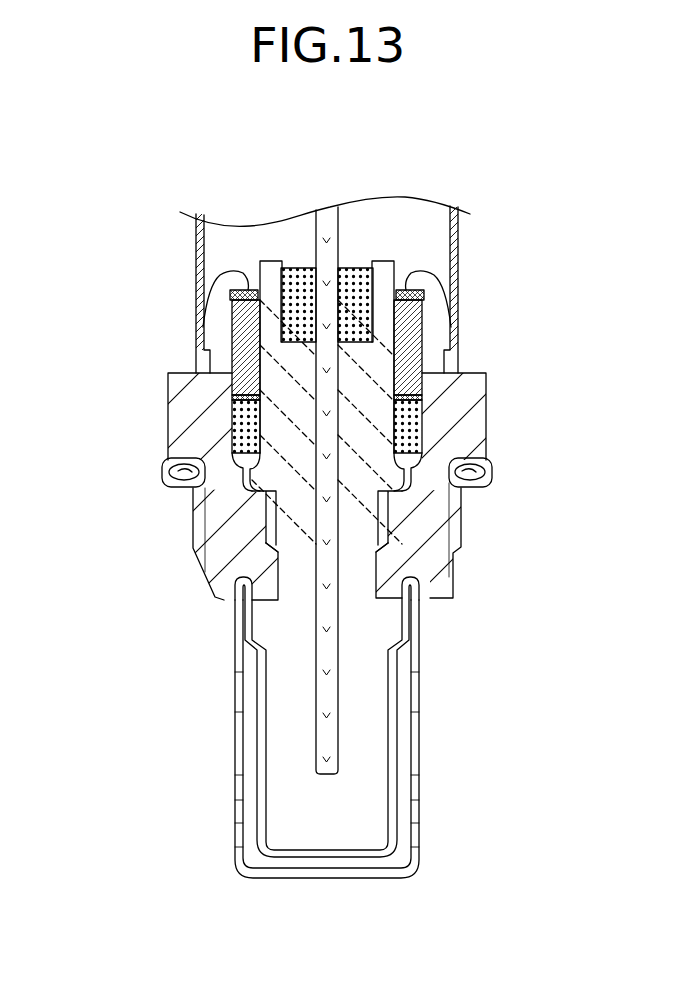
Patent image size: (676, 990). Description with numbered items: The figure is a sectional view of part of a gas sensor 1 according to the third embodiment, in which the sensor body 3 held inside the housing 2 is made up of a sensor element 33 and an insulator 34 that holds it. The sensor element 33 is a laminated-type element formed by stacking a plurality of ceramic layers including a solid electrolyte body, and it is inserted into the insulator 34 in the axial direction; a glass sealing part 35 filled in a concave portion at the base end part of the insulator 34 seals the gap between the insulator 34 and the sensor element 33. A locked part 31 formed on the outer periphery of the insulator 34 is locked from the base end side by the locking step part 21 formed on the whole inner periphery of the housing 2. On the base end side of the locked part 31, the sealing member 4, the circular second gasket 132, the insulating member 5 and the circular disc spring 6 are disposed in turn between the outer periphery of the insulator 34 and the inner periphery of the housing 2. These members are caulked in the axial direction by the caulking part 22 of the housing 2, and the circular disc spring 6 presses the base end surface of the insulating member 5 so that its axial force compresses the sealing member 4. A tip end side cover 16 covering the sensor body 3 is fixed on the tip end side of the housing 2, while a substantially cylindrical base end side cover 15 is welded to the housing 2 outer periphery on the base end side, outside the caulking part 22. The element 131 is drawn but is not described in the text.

The gas sensor 1 is at (148, 870).
The housing 2 is at (460, 393).
The sensor body 3 is at (288, 489).
The sealing member 4 is at (228, 442).
The insulating member 5 is at (232, 322).
The circular disc spring 6 is at (400, 286).
The base end side cover 15 is at (197, 235).
The tip end side cover 16 is at (258, 856).
The locking step part 21 is at (398, 506).
The caulking part 22 is at (416, 275).
The locked part 31 is at (390, 474).
The sensor element 33 is at (322, 680).
The insulator 34 is at (278, 425).
The glass sealing part 35 is at (300, 268).
The bent portion 131 is at (392, 497).
The second gasket 132 is at (233, 396).